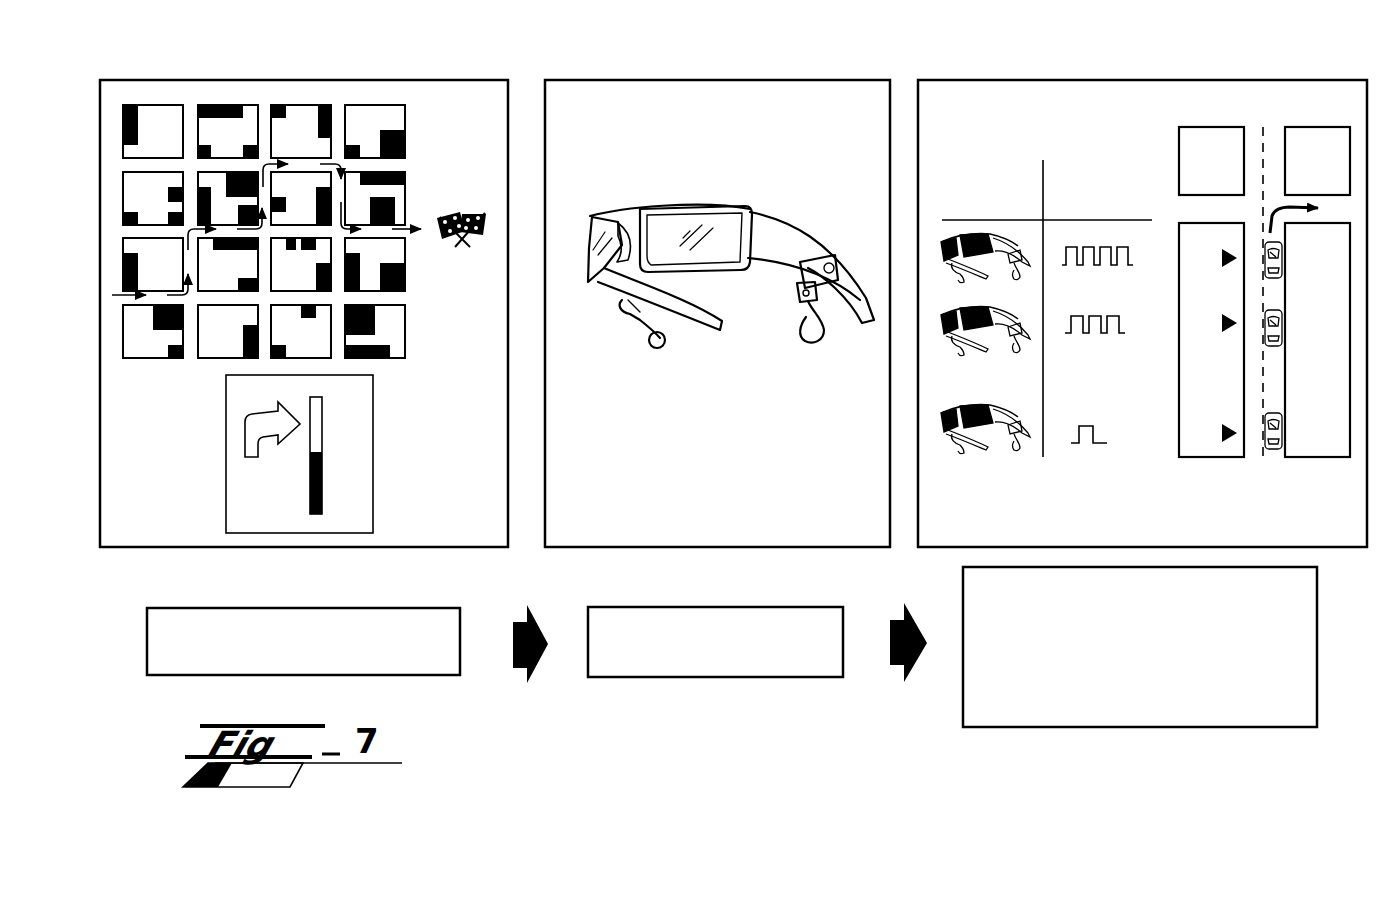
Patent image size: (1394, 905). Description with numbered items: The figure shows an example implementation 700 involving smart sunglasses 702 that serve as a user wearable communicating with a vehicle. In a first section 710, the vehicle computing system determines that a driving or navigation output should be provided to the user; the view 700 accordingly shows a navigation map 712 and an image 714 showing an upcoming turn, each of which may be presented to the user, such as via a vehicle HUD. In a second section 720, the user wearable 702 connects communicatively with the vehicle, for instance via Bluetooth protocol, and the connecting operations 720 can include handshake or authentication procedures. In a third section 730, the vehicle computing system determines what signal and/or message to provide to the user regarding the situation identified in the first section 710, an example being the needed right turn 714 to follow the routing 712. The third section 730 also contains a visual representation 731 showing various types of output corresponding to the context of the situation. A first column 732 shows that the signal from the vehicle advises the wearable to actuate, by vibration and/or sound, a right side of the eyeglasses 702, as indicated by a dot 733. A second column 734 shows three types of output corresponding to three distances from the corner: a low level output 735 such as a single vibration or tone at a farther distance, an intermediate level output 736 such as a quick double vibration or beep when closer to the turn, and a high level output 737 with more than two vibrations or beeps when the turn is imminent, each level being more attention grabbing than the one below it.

The example implementation 700 is at (939, 52).
The smart sunglasses 702 is at (768, 223).
The first section 710 is at (328, 655).
The navigation map 712 is at (339, 310).
The image showing an upcoming turn 714 is at (385, 481).
The second section 720 is at (743, 653).
The third section 730 is at (1160, 653).
The visual representation 731 is at (1235, 102).
The first column 732 is at (1013, 198).
The dot 733 is at (1052, 473).
The second column 734 is at (1125, 198).
The low level output 735 is at (1122, 434).
The intermediate level output 736 is at (1120, 324).
The high level output 737 is at (1121, 259).